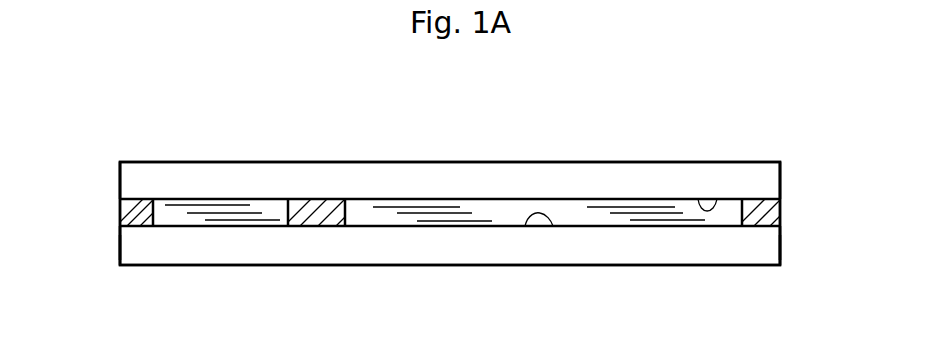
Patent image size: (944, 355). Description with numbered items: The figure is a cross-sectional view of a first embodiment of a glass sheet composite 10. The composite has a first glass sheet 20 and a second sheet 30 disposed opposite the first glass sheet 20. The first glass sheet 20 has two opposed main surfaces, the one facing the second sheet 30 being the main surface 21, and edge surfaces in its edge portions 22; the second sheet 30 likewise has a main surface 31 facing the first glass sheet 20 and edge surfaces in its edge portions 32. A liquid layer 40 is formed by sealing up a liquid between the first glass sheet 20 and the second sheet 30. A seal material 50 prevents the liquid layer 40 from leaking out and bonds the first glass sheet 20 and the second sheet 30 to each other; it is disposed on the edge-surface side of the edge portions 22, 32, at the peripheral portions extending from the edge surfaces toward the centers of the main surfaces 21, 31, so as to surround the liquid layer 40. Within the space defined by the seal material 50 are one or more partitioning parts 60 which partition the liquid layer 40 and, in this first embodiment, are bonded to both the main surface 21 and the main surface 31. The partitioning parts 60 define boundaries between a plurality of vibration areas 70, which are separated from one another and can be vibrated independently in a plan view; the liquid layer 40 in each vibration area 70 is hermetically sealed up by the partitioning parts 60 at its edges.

The glass sheet composite 10 is at (427, 142).
The first glass sheet 20 is at (553, 178).
The main surface 21 is at (710, 210).
The edge portions 22 is at (118, 188).
The second sheet 30 is at (621, 238).
The main surface 31 is at (526, 226).
The edge portions 32 is at (118, 243).
The liquid layer 40 is at (380, 218).
The seal material 50 is at (140, 213).
The partitioning parts 60 is at (312, 210).
The vibration areas 70 is at (183, 210).